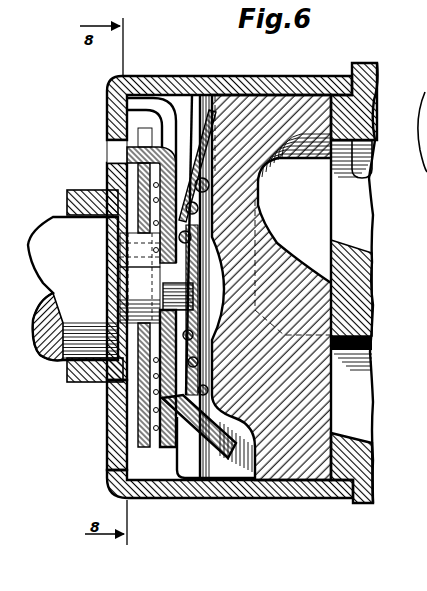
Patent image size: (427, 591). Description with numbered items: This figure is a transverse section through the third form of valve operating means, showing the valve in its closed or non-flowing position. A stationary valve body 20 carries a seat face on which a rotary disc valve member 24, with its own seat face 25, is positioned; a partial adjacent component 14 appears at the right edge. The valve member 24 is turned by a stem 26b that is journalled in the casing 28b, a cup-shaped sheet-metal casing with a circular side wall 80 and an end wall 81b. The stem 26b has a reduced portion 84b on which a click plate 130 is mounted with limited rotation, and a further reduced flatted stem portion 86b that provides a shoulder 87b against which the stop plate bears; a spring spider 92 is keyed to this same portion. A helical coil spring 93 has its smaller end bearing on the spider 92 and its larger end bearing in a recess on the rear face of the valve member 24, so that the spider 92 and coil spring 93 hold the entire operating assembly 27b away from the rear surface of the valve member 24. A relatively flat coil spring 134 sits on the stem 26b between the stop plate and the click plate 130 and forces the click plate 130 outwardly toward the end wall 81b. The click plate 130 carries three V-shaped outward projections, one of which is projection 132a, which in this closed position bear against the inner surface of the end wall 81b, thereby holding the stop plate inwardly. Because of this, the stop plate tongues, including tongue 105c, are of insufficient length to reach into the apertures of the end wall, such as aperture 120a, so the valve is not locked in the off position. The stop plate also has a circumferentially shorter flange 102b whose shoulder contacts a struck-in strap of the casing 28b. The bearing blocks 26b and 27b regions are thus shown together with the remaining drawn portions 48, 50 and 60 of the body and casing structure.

The adjacent component (partial) 14 is at (420, 151).
The valve body 20 is at (368, 92).
The rotary disc valve member 24 is at (310, 445).
The seat face 25 is at (336, 405).
The stem 26b is at (53, 217).
The operating assembly 27b is at (143, 453).
The casing 28b is at (235, 500).
The sealing ring 48 is at (372, 341).
The annular groove 50 is at (372, 171).
The body block 60 is at (307, 215).
The circular side wall 80 is at (203, 499).
The end wall 81b is at (110, 426).
The reduced portion of the stem 84b is at (135, 377).
The stem portion 86b is at (160, 268).
The shoulder 87b is at (148, 268).
The spring spider 92 is at (213, 193).
The coil spring 93 is at (197, 393).
The flange of the stop plate 102b is at (145, 105).
The tongue 105c is at (120, 312).
The aperture 120a is at (108, 150).
The click plate 130 is at (140, 372).
The outward projection 132a is at (118, 243).
The flat coil spring 134 is at (138, 430).